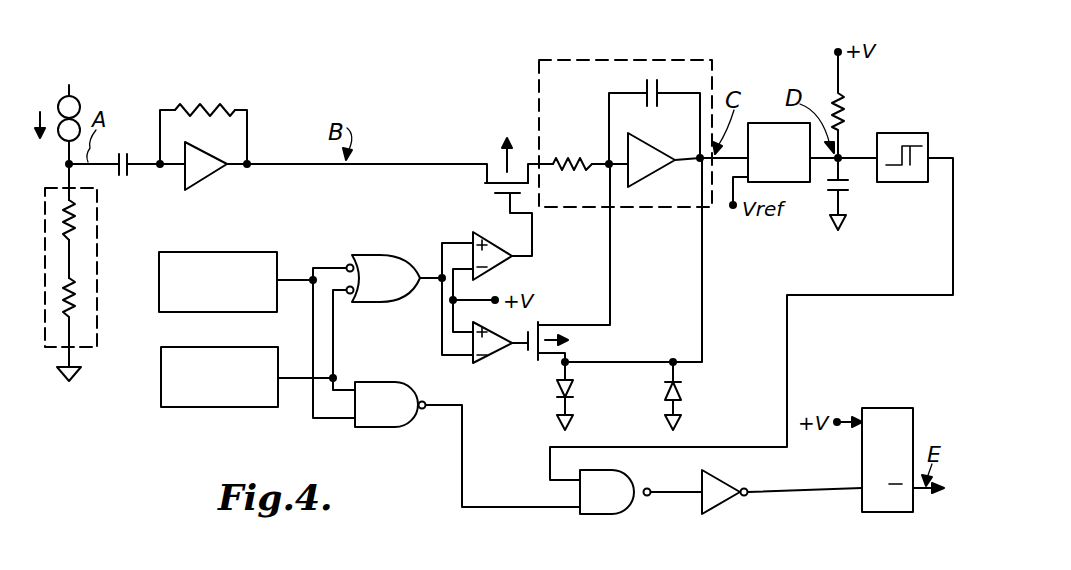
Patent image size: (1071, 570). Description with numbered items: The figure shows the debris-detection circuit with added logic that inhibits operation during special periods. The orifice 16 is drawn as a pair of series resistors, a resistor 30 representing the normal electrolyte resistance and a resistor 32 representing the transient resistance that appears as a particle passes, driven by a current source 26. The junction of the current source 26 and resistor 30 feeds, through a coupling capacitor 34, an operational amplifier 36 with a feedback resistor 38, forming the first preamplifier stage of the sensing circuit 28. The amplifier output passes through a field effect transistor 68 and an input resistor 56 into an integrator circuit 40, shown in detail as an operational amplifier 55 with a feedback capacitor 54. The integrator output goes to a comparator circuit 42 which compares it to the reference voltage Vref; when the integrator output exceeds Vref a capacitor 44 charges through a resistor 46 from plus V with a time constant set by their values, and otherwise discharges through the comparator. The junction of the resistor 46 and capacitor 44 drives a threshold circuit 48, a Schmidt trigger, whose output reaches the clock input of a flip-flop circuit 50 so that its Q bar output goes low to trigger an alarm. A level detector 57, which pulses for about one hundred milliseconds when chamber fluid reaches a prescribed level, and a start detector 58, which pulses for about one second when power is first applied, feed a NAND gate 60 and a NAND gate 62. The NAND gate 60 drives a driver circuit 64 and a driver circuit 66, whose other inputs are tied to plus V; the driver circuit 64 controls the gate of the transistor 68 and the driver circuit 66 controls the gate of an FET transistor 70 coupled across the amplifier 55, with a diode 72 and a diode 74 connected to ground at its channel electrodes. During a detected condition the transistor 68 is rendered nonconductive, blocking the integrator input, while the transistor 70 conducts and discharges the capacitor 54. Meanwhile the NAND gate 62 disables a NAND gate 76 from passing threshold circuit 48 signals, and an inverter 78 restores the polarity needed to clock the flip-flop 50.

The orifice 16 is at (93, 267).
The current source 26 is at (78, 100).
The circuit 28 is at (203, 111).
The resistor 30 is at (78, 206).
The resistor 32 is at (78, 314).
The coupling capacitor 34 is at (126, 153).
The operational amplifier 36 is at (205, 180).
The feedback resistor 38 is at (205, 117).
The integrator circuit 40 is at (625, 111).
The comparator circuit 42 is at (759, 123).
The capacitor 44 is at (852, 193).
The resistor 46 is at (846, 103).
The threshold circuit 48 is at (893, 133).
The flip-flop circuit 50 is at (897, 512).
The feedback capacitor 54 is at (645, 92).
The operational amplifier 55 is at (645, 183).
The input resistor 56 is at (584, 162).
The level detector 57 is at (159, 275).
The start detector 58 is at (161, 373).
The NAND gate 60 is at (378, 255).
The NAND gate 62 is at (385, 382).
The driver circuit 64 is at (486, 236).
The driver circuit 66 is at (493, 364).
The field effect transistor 68 is at (496, 162).
The FET transistor 70 is at (572, 346).
The diode 72 is at (575, 390).
The diode 74 is at (683, 392).
The NAND gate 76 is at (635, 473).
The inverter 78 is at (725, 469).